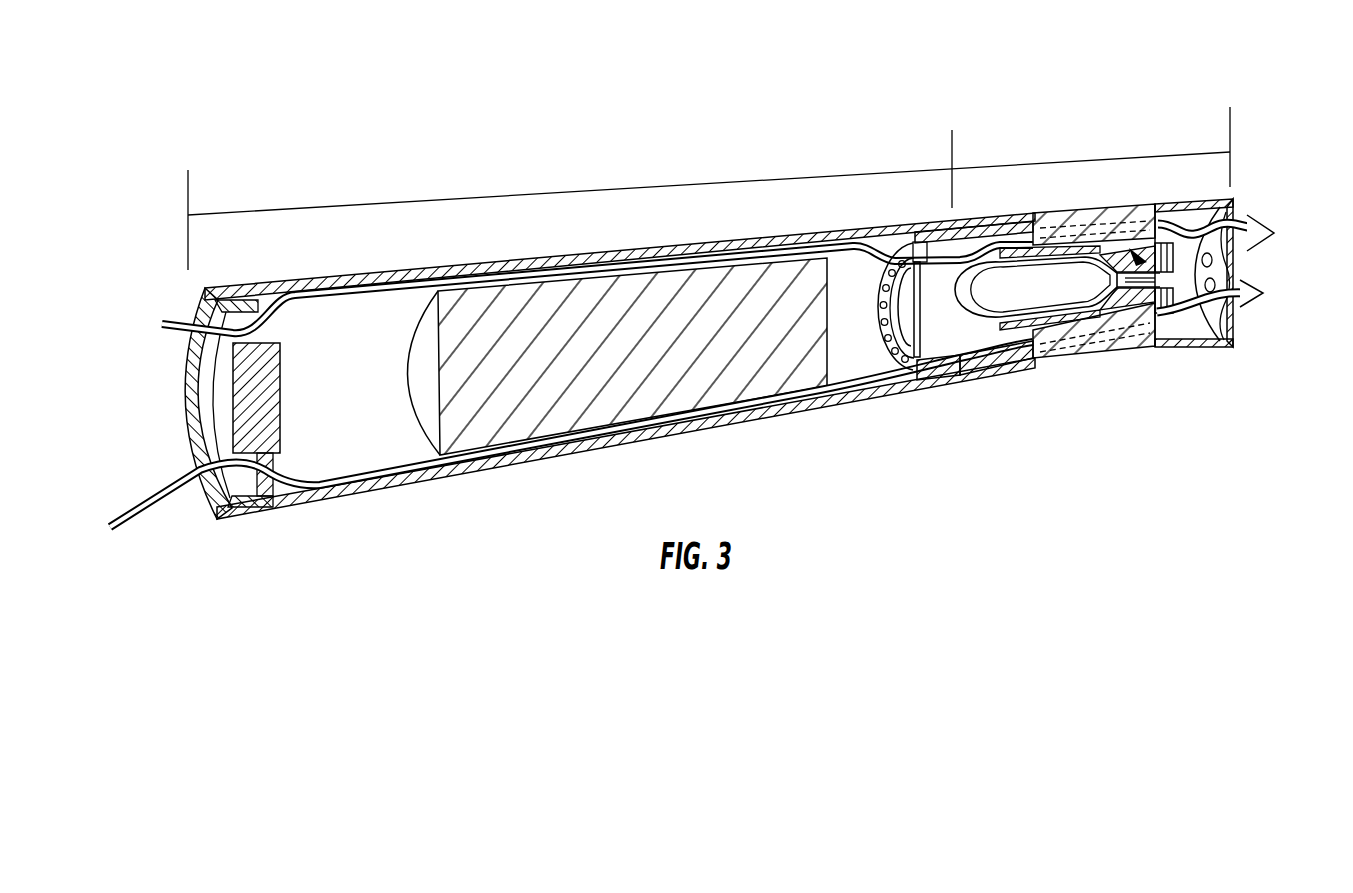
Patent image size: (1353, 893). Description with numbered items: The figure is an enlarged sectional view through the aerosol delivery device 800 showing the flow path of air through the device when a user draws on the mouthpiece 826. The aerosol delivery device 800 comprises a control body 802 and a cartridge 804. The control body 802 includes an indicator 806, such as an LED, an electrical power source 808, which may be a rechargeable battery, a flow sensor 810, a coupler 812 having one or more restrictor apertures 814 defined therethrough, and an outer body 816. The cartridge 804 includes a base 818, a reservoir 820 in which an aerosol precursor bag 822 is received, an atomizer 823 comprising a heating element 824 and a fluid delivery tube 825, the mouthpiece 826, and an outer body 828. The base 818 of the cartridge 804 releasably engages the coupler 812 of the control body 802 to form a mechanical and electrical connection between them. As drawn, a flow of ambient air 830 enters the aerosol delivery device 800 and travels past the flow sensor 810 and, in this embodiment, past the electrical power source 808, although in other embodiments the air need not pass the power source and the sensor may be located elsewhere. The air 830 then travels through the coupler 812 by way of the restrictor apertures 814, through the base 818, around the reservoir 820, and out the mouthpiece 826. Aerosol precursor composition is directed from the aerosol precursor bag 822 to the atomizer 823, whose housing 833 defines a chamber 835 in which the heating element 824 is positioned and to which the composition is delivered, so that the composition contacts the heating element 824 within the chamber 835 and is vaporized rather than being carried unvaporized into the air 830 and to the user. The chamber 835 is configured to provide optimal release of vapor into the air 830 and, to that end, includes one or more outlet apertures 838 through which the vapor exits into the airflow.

The aerosol delivery device 800 is at (282, 66).
The control body 802 is at (730, 153).
The cartridge 804 is at (1073, 132).
The indicator 806 is at (183, 328).
The electrical power source 808 is at (560, 410).
The flow sensor 810 is at (252, 437).
The coupler 812 is at (960, 377).
The restrictor apertures 814 is at (923, 310).
The outer body 816 is at (367, 492).
The base 818 is at (1013, 362).
The reservoir 820 is at (1090, 330).
The aerosol precursor bag 822 is at (1030, 312).
The atomizer 823 is at (1140, 257).
The heating element 824 is at (1207, 340).
The fluid delivery tube 825 is at (1160, 288).
The mouthpiece 826 is at (1213, 260).
The outer body 828 is at (1122, 207).
The ambient air 830 is at (137, 510).
The housing 833 is at (1176, 268).
The chamber 835 is at (1200, 222).
The outlet apertures 838 is at (1158, 243).